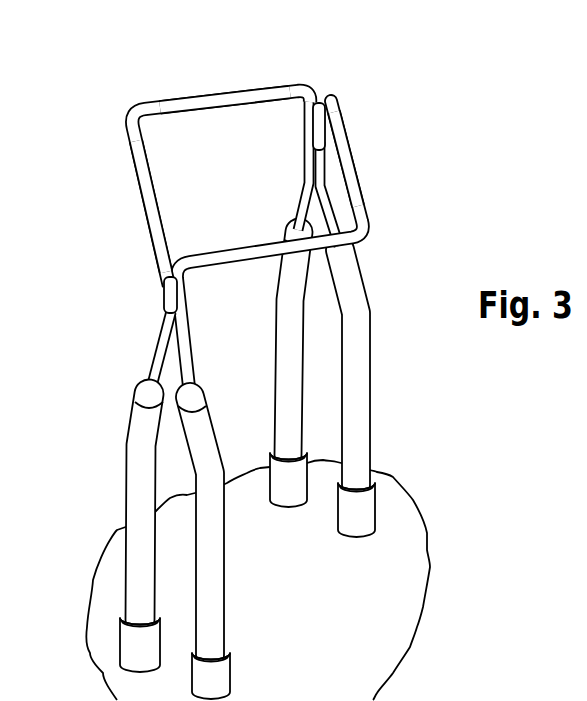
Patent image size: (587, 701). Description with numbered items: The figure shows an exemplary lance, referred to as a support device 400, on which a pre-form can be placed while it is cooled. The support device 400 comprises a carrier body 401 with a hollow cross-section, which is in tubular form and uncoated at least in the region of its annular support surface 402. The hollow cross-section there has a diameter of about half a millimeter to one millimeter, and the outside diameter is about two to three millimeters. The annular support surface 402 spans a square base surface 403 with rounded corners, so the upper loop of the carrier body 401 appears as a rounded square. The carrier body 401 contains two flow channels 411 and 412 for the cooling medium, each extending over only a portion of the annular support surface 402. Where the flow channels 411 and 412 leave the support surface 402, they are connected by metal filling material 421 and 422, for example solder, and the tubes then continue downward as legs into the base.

The support device 400 is at (272, 356).
The carrier body 401 is at (169, 149).
The annular support surface 402 is at (169, 149).
The square base surface 403 is at (223, 127).
The flow channel 411 is at (137, 152).
The flow channel 412 is at (338, 116).
The metal filling material 421 is at (165, 300).
The metal filling material 422 is at (317, 103).